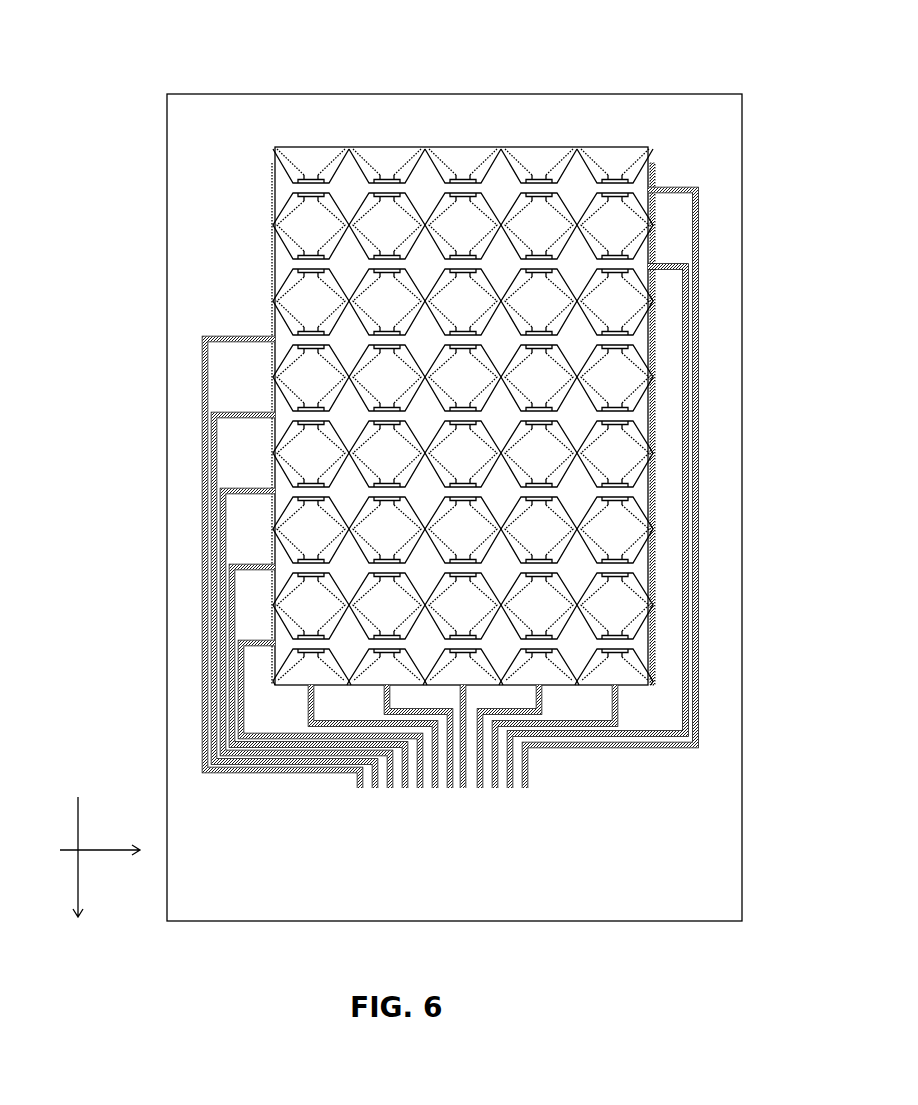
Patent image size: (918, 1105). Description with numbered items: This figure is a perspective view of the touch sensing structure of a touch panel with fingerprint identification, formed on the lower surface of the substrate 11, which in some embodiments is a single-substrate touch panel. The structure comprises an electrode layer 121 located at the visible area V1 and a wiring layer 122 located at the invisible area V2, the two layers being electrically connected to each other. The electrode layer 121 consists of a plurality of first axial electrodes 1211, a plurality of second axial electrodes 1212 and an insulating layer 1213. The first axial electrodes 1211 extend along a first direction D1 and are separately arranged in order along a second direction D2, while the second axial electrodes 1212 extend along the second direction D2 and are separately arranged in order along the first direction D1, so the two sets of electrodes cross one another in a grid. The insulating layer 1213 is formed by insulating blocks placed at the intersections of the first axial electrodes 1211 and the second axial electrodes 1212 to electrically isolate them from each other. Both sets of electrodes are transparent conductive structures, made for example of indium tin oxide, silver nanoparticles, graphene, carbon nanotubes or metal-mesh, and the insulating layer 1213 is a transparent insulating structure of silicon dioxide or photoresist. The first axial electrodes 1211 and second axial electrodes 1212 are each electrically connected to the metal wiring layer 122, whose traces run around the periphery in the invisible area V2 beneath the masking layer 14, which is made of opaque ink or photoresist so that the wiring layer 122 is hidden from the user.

The substrate 11 is at (57, 30).
The masking layer 14 is at (712, 256).
The electrode layer 121 is at (452, 55).
The first axial electrodes 1211 is at (316, 163).
The second axial electrodes 1212 is at (425, 178).
The insulating layer 1213 is at (370, 170).
The wiring layer 122 is at (700, 432).
The visible area V1 is at (645, 160).
The invisible area V2 is at (708, 524).
The first direction D1 is at (95, 857).
The second direction D2 is at (100, 835).